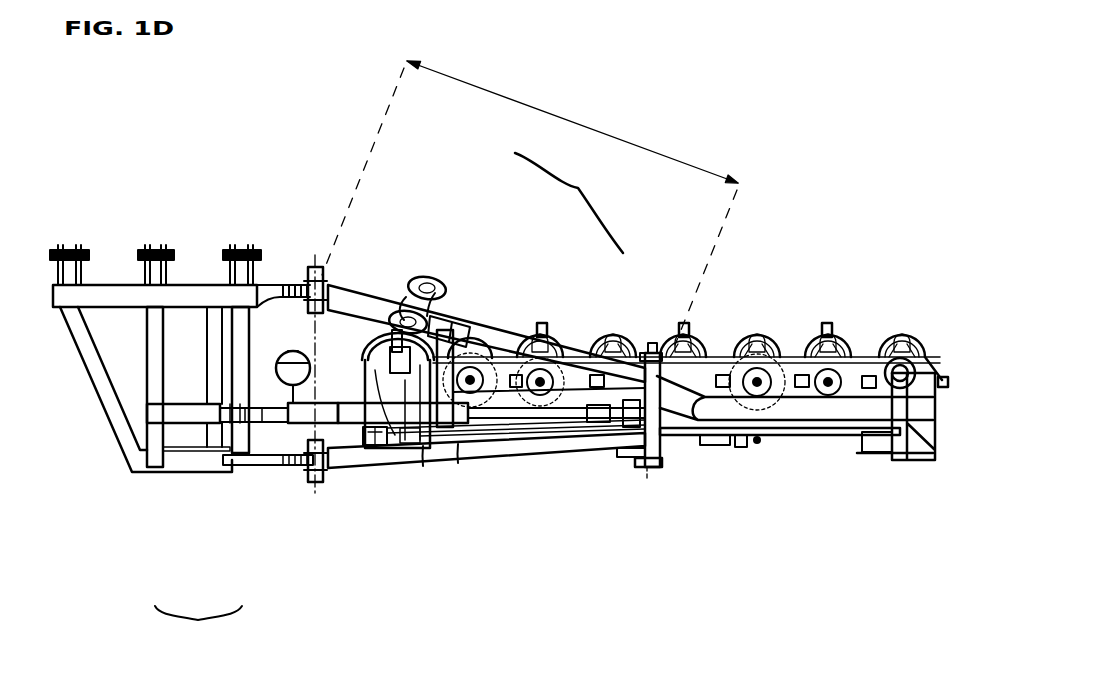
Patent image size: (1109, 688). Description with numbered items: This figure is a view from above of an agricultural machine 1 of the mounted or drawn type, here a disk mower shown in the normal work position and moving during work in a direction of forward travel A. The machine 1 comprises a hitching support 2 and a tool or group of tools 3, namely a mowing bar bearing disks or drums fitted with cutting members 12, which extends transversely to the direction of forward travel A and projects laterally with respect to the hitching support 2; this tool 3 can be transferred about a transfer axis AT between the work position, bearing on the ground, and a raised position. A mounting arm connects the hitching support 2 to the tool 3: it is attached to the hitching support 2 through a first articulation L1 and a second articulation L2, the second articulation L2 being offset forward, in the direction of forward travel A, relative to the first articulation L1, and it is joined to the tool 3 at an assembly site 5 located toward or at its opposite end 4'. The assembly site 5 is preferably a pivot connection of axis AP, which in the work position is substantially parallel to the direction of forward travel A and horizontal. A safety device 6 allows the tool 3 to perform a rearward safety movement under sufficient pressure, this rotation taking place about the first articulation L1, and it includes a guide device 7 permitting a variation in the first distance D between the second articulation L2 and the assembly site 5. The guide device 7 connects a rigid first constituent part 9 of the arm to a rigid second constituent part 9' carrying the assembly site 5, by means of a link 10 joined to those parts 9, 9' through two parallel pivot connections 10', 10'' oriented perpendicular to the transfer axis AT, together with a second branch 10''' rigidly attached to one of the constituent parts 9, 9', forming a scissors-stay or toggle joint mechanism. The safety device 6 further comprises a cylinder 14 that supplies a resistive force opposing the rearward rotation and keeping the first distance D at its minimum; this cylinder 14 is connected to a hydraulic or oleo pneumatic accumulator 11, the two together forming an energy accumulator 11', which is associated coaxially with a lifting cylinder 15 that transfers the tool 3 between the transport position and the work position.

The agricultural machine 1 is at (815, 113).
The hitching support 2 is at (117, 293).
The tool or group of tools 3 is at (783, 334).
The opposite end of the arm 4' is at (647, 534).
The assembly site 5 is at (657, 428).
The safety device 6 is at (383, 485).
The guide device 7 is at (569, 203).
The first constituent part 9 is at (486, 271).
The second constituent part 9' is at (486, 483).
The link 10 is at (485, 273).
The pivot connection 10' is at (474, 251).
The pivot connection 10'' is at (491, 295).
The second branch 10''' is at (459, 259).
The hydraulic or oleo pneumatic accumulator 11 is at (249, 503).
The energy accumulator 11' is at (198, 632).
The cutting members 12 is at (947, 377).
The cylinder 14 is at (290, 382).
The lifting cylinder 15 is at (393, 420).
The transfer axis AT is at (315, 337).
The pivot axis AP is at (648, 477).
The first articulation L1 is at (310, 465).
The second articulation L2 is at (325, 277).
The first distance D is at (530, 203).
The direction of forward travel A is at (896, 129).